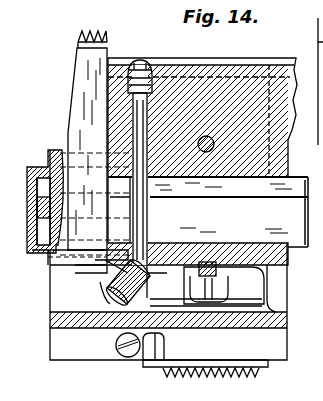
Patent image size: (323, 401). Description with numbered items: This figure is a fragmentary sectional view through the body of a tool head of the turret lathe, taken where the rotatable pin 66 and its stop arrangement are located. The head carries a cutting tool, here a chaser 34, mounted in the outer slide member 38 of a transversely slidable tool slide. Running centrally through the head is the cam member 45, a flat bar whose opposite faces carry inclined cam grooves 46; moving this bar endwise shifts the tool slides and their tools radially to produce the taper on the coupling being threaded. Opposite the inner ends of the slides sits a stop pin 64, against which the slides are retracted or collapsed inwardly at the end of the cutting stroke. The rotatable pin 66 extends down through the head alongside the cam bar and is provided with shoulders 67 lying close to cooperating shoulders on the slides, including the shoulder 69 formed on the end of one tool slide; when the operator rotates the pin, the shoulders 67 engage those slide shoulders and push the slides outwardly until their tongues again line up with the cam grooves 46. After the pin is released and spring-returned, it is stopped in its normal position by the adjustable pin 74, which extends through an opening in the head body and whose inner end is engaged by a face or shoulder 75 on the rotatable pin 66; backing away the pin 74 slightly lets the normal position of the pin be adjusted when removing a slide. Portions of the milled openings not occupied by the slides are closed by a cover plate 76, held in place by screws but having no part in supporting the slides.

The chaser 34 is at (107, 25).
The outer slide member 38 is at (87, 133).
The cam member 45 is at (40, 183).
The cam groove 46 is at (36, 205).
The stop pin 64 is at (207, 136).
The rotatable pin 66 is at (112, 278).
The shoulder 67 is at (108, 288).
The shoulder 69 is at (82, 272).
The adjustable pin 74 is at (152, 208).
The face or shoulder 75 is at (128, 258).
The cover plate 76 is at (90, 353).